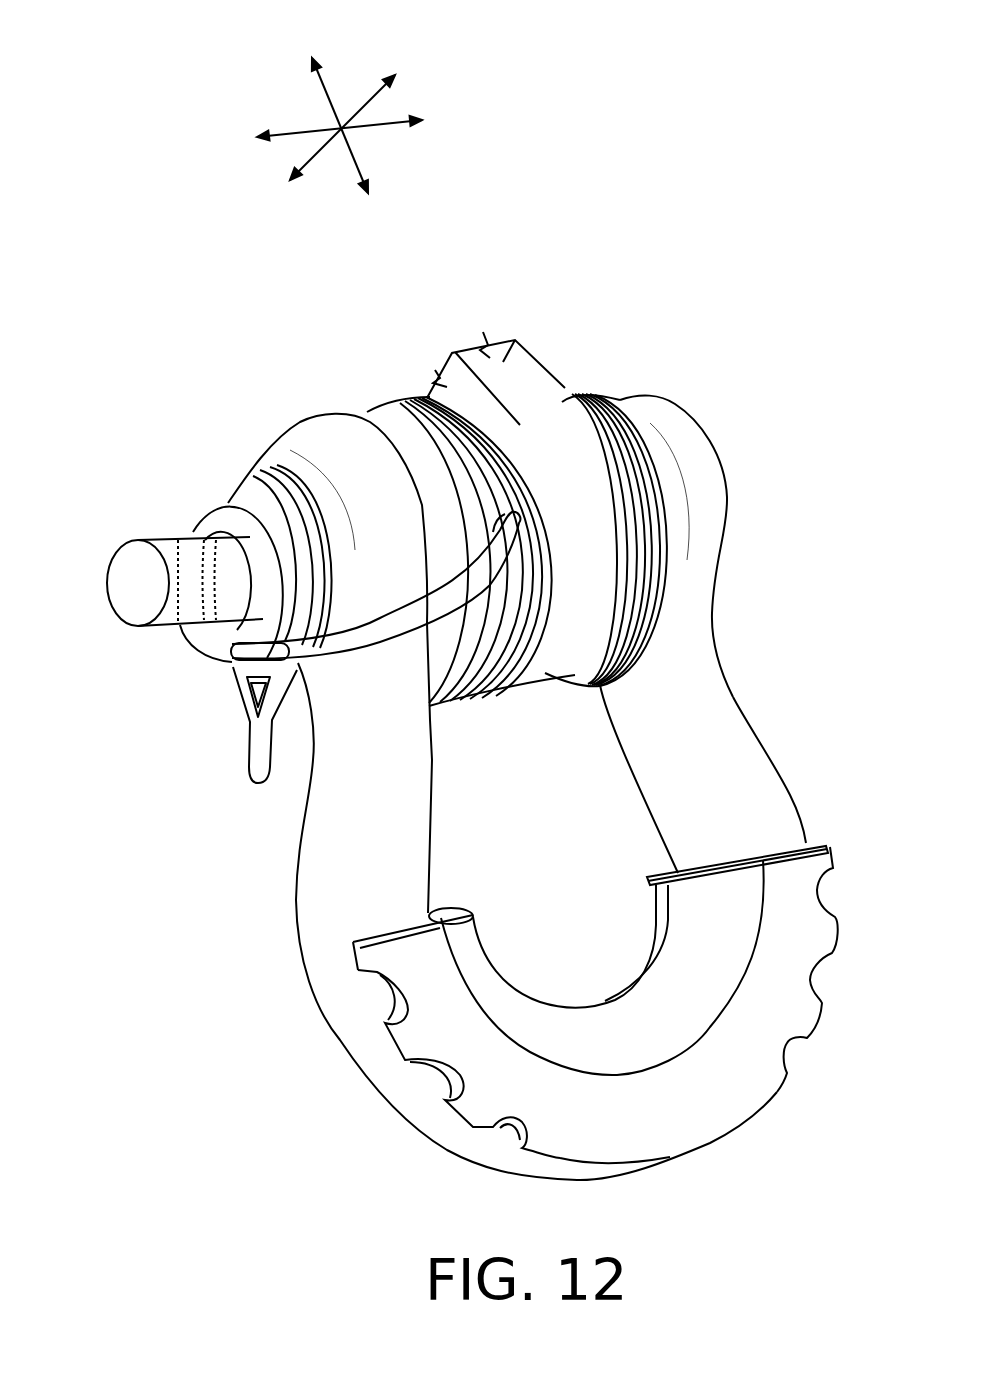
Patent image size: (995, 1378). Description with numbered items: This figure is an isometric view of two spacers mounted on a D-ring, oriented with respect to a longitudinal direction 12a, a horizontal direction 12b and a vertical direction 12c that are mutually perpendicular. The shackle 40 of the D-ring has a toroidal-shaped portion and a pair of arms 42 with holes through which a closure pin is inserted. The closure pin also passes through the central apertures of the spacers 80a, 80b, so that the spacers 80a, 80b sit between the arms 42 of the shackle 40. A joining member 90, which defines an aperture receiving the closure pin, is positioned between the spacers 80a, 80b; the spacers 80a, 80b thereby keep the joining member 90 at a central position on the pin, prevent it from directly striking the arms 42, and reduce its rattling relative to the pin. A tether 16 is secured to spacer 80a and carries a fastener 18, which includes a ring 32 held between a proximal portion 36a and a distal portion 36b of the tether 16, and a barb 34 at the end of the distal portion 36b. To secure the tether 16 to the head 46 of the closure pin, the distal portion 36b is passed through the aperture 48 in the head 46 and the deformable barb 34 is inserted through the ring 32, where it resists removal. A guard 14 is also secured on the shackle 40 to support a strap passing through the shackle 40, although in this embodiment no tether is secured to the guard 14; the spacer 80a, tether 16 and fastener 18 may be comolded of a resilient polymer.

The longitudinal direction 12a is at (373, 127).
The horizontal direction 12b is at (310, 160).
The vertical direction 12c is at (325, 80).
The guard 14 is at (574, 963).
The tether 16 is at (502, 508).
The fastener 18 is at (309, 653).
The ring 32 is at (267, 653).
The barb 34 is at (247, 693).
The proximal portion 36a is at (360, 640).
The distal portion 36b is at (207, 523).
The shackle 40 is at (322, 823).
The arms 42 is at (327, 435).
The head 46 is at (140, 572).
The aperture 48 is at (213, 577).
The spacer 80a is at (408, 384).
The spacer 80b is at (595, 375).
The joining member 90 is at (515, 340).